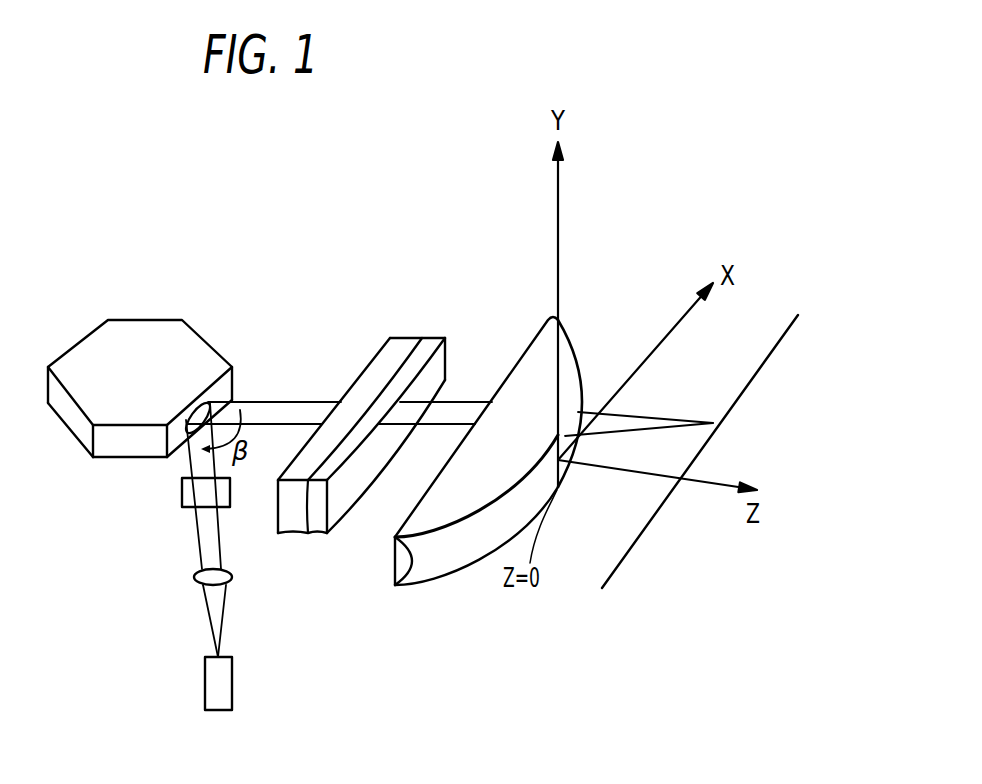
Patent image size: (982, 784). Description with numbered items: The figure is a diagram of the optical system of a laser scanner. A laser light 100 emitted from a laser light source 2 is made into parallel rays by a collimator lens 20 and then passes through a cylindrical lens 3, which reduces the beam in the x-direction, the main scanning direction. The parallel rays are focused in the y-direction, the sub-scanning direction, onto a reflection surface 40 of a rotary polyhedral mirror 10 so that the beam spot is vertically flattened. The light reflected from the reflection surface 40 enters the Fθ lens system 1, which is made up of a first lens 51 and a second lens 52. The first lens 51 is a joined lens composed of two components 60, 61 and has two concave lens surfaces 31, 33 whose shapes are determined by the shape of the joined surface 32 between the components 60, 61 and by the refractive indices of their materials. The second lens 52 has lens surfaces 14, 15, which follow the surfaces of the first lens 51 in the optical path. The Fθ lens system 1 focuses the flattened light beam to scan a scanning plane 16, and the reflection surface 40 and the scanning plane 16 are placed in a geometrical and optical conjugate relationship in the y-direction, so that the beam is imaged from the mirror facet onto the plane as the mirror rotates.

The Fθ lens system 1 is at (597, 217).
The laser light source 2 is at (205, 678).
The cylindrical lens 3 is at (182, 502).
The rotary polyhedral mirror 10 is at (130, 318).
The lens surface 14 is at (518, 362).
The lens surface 15 is at (585, 385).
The scanning plane 16 is at (625, 556).
The collimator lens 20 is at (197, 583).
The concave lens surface 31 is at (374, 358).
The joined surface 32 is at (418, 357).
The concave lens surface 33 is at (445, 358).
The reflection surface 40 is at (232, 378).
The first lens 51 is at (473, 282).
The second lens 52 is at (498, 282).
The component 60 is at (292, 534).
The component 61 is at (323, 534).
The laser light 100 is at (226, 617).